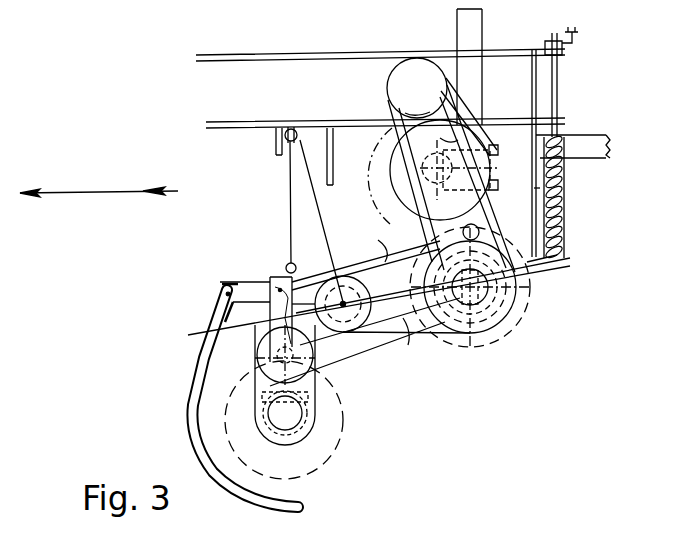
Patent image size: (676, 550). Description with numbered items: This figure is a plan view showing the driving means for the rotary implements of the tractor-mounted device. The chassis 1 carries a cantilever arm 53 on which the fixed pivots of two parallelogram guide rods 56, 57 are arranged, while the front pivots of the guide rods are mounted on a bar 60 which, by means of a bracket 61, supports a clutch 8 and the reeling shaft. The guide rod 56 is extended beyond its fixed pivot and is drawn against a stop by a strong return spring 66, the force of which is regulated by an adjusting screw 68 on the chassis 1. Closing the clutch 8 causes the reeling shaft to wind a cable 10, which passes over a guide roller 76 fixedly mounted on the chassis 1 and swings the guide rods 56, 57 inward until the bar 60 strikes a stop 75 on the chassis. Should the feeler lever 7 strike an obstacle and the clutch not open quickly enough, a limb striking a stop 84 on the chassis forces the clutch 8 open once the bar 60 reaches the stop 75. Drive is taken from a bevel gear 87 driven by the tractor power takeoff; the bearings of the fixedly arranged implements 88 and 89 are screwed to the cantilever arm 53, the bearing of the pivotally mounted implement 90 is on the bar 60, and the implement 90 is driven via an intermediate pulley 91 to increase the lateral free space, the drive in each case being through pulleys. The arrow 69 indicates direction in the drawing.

The chassis 1 is at (243, 62).
The feeler lever 7 is at (190, 388).
The clutch 8 is at (343, 300).
The cable 10 is at (306, 198).
The cantilever arm 53 is at (473, 25).
The parallelogram guide rod 56 is at (408, 345).
The parallelogram guide rod 57 is at (370, 258).
The bar 60 is at (272, 311).
The bracket 61 is at (534, 191).
The return spring 66 is at (568, 208).
The adjusting screw 68 is at (580, 44).
The direction arrow 69 is at (99, 181).
The stop 75 is at (275, 145).
The guide roller 76 is at (294, 128).
The stop 84 is at (336, 146).
The bevel gear 87 is at (410, 72).
The fixedly arranged implement 88 is at (528, 326).
The fixedly arranged implement 89 is at (480, 122).
The pivotally mounted implement 90 is at (328, 463).
The intermediate pulley 91 is at (236, 352).